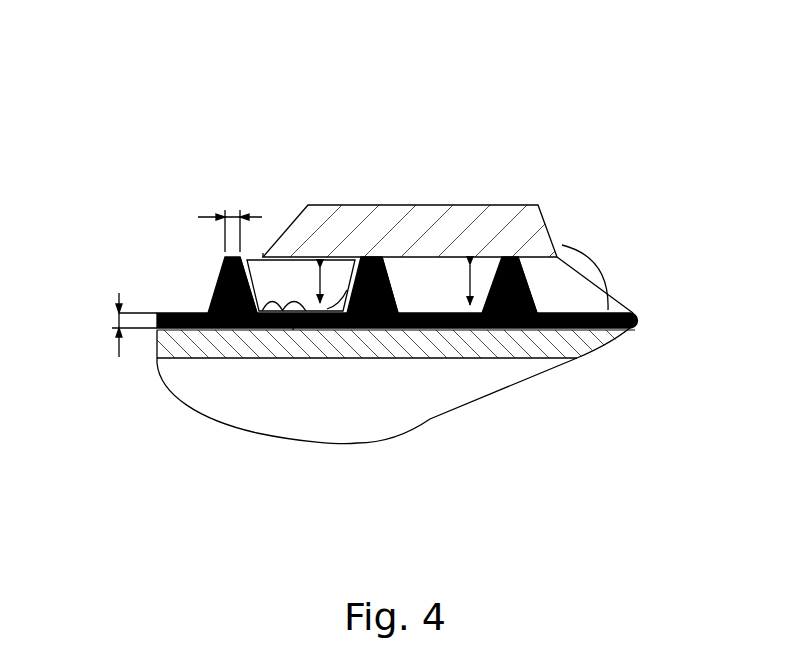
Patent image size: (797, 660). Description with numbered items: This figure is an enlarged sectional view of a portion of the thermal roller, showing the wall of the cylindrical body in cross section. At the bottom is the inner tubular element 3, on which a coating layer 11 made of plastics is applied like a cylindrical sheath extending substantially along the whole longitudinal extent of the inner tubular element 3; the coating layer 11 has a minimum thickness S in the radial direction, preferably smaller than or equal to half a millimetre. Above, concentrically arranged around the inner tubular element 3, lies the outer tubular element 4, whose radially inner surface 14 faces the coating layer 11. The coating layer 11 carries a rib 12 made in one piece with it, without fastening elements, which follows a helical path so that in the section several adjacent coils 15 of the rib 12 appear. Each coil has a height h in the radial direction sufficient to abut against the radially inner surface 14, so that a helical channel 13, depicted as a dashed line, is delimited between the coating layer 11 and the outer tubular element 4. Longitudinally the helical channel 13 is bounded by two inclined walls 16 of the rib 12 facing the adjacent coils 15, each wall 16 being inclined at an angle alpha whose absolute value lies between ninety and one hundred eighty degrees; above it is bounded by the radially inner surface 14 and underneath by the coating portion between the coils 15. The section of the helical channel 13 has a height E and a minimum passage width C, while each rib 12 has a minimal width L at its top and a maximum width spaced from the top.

The inner tubular element 3 is at (603, 340).
The outer tubular element 4 is at (540, 218).
The coating layer 11 is at (633, 312).
The rib 12 is at (253, 292).
The helical channel 13 is at (263, 253).
The radially inner surface 14 is at (305, 281).
The coils 15 is at (229, 255).
The walls 16 is at (277, 330).
The height of the helical channel section E is at (297, 260).
The minimum width of the passage section C is at (293, 330).
The height in the radial direction h is at (458, 285).
The minimal width of the rib L is at (232, 216).
The minimum thickness of the coating layer S is at (118, 320).